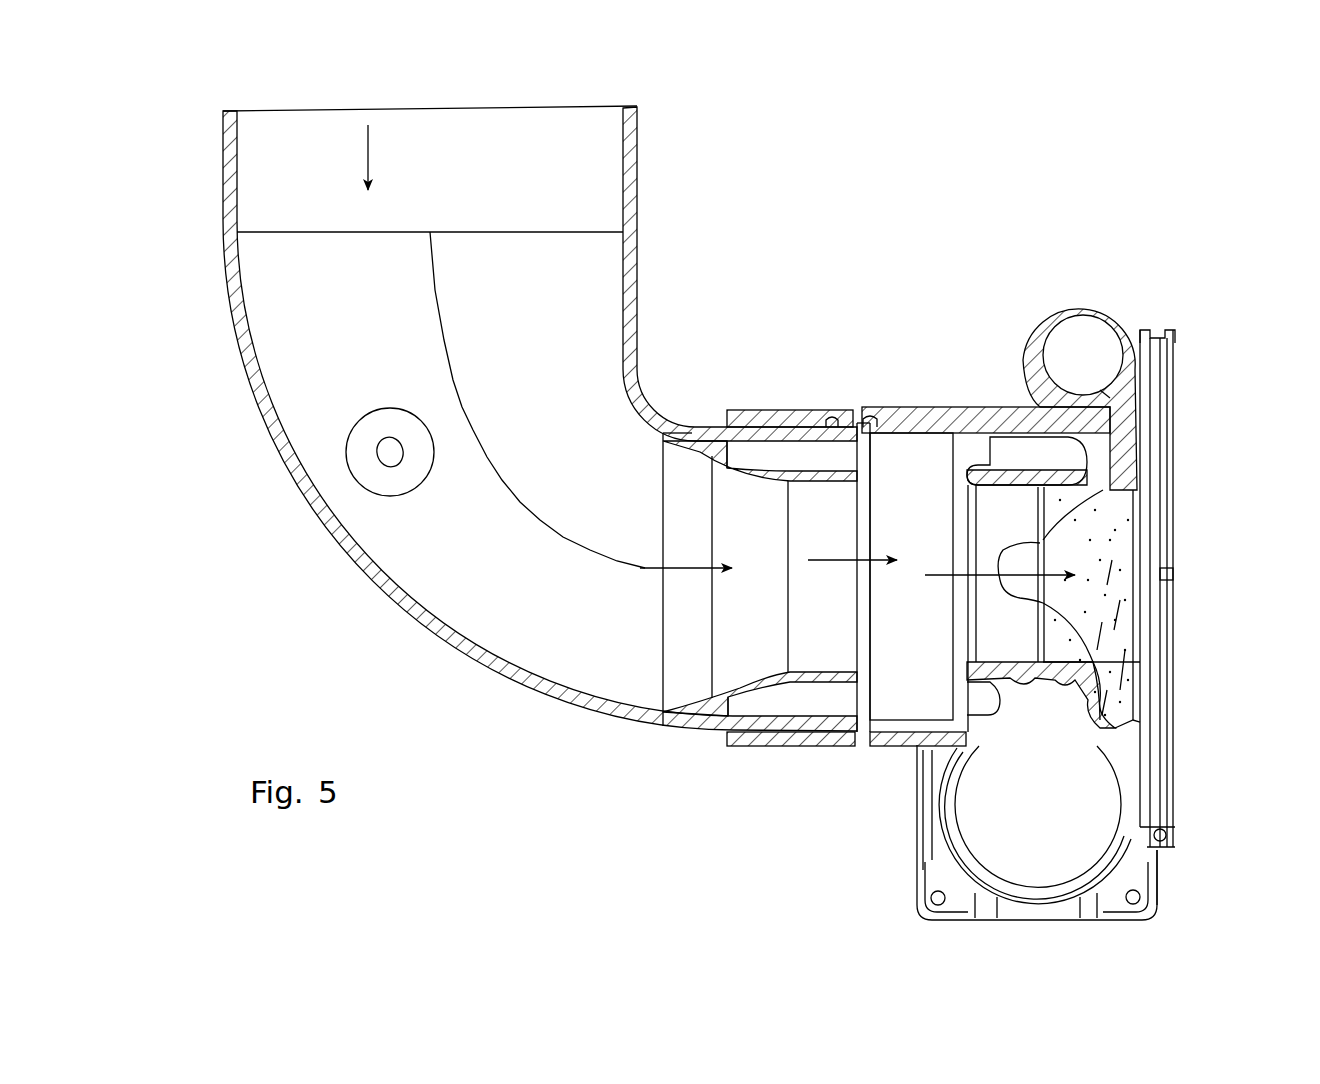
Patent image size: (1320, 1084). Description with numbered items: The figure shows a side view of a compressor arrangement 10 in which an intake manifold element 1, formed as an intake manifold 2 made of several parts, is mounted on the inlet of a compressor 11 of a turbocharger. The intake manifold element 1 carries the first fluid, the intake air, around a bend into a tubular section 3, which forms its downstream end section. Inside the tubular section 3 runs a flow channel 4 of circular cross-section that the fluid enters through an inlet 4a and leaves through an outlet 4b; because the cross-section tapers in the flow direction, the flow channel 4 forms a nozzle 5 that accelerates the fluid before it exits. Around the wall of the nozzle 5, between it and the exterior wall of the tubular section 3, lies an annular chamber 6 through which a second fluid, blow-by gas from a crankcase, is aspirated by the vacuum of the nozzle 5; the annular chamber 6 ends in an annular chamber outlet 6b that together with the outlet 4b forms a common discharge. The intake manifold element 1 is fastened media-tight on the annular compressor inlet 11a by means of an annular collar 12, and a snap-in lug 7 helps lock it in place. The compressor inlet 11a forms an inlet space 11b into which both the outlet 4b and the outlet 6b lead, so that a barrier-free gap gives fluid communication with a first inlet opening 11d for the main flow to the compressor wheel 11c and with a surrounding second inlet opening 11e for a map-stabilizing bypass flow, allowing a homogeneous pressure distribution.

The intake manifold element 1 is at (750, 310).
The intake manifold 2 is at (509, 366).
The tubular section 3 is at (697, 537).
The flow channel 4 is at (743, 654).
The inlet 4a is at (663, 643).
The outlet 4b is at (855, 657).
The nozzle 5 is at (814, 537).
The annular chamber 6 is at (845, 464).
The annular chamber outlet 6b is at (848, 717).
The snap-in lug 7 is at (826, 420).
The compressor arrangement 10 is at (884, 302).
The compressor 11 is at (1023, 308).
The compressor inlet 11a is at (893, 425).
The inlet space 11b is at (930, 502).
The compressor wheel 11c is at (1128, 478).
The first inlet opening 11d is at (968, 647).
The second inlet opening 11e is at (974, 460).
The annular collar 12 is at (765, 410).